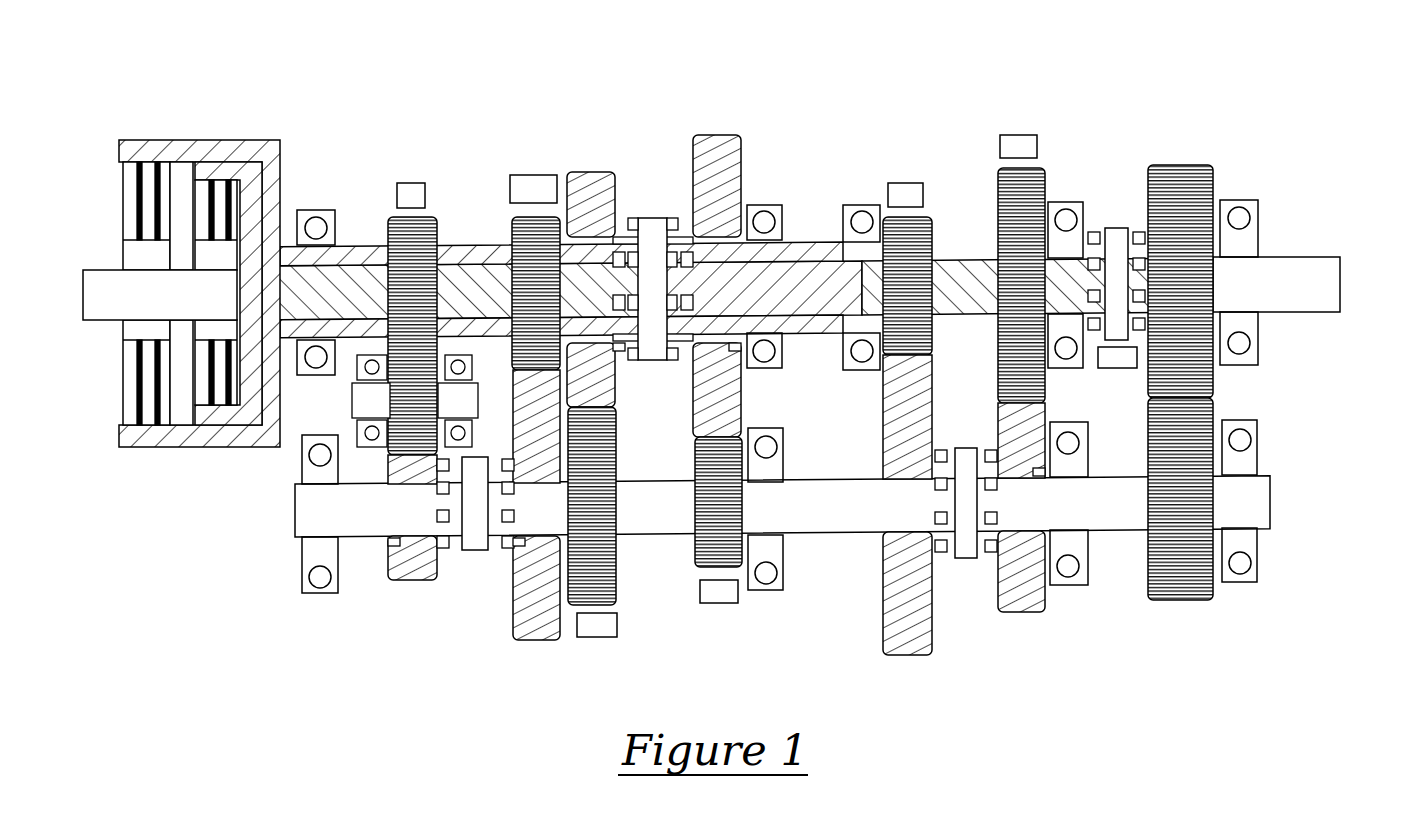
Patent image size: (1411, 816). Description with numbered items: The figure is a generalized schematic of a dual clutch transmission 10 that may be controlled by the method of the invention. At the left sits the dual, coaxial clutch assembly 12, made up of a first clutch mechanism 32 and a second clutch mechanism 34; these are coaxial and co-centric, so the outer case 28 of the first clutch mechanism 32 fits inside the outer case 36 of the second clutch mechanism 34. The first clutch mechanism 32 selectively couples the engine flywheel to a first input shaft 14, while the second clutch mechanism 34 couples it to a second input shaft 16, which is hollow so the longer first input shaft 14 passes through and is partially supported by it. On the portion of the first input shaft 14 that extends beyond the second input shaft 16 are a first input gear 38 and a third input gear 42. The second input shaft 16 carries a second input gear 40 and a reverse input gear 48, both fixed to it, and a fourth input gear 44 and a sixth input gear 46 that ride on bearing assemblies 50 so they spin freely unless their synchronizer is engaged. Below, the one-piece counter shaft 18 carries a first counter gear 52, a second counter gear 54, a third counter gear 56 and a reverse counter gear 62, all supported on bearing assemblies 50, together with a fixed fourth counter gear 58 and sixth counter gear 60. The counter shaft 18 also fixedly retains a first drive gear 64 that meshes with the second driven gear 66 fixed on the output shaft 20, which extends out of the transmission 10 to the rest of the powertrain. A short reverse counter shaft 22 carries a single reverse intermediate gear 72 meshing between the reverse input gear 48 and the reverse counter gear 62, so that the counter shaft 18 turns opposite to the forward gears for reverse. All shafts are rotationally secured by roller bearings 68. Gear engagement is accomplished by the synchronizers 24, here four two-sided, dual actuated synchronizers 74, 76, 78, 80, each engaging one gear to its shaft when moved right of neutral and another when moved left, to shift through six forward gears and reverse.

The dual clutch transmission 10 is at (501, 113).
The dual, coaxial clutch assembly 12 is at (219, 256).
The first input shaft 14 is at (960, 258).
The second input shaft 16 is at (352, 247).
The counter shaft 18 is at (303, 517).
The output shaft 20 is at (1335, 278).
The reverse counter shaft 22 is at (352, 410).
The synchronizers 24 is at (675, 168).
The outer case of the first clutch mechanism 28 is at (255, 198).
The first clutch mechanism 32 is at (238, 165).
The second clutch mechanism 34 is at (150, 170).
The outer case of the second clutch mechanism 36 is at (281, 165).
The first input gear 38 is at (940, 217).
The second input gear 40 is at (512, 217).
The third input gear 42 is at (1040, 168).
The fourth input gear 44 is at (603, 172).
The sixth input gear 46 is at (742, 150).
The reverse input gear 48 is at (441, 228).
The bearing assemblies 50 is at (623, 347).
The first counter gear 52 is at (890, 583).
The second counter gear 54 is at (555, 640).
The third counter gear 56 is at (1017, 612).
The fourth counter gear 58 is at (618, 583).
The sixth counter gear 60 is at (695, 553).
The reverse counter gear 62 is at (392, 572).
The first drive gear 64 is at (1148, 580).
The second driven gear 66 is at (1200, 165).
The roller bearings 68 is at (793, 210).
The reverse intermediate gear 72 is at (352, 400).
The synchronizer 74 is at (653, 217).
The synchronizer 76 is at (1115, 228).
The synchronizer 78 is at (967, 560).
The synchronizer 80 is at (472, 552).